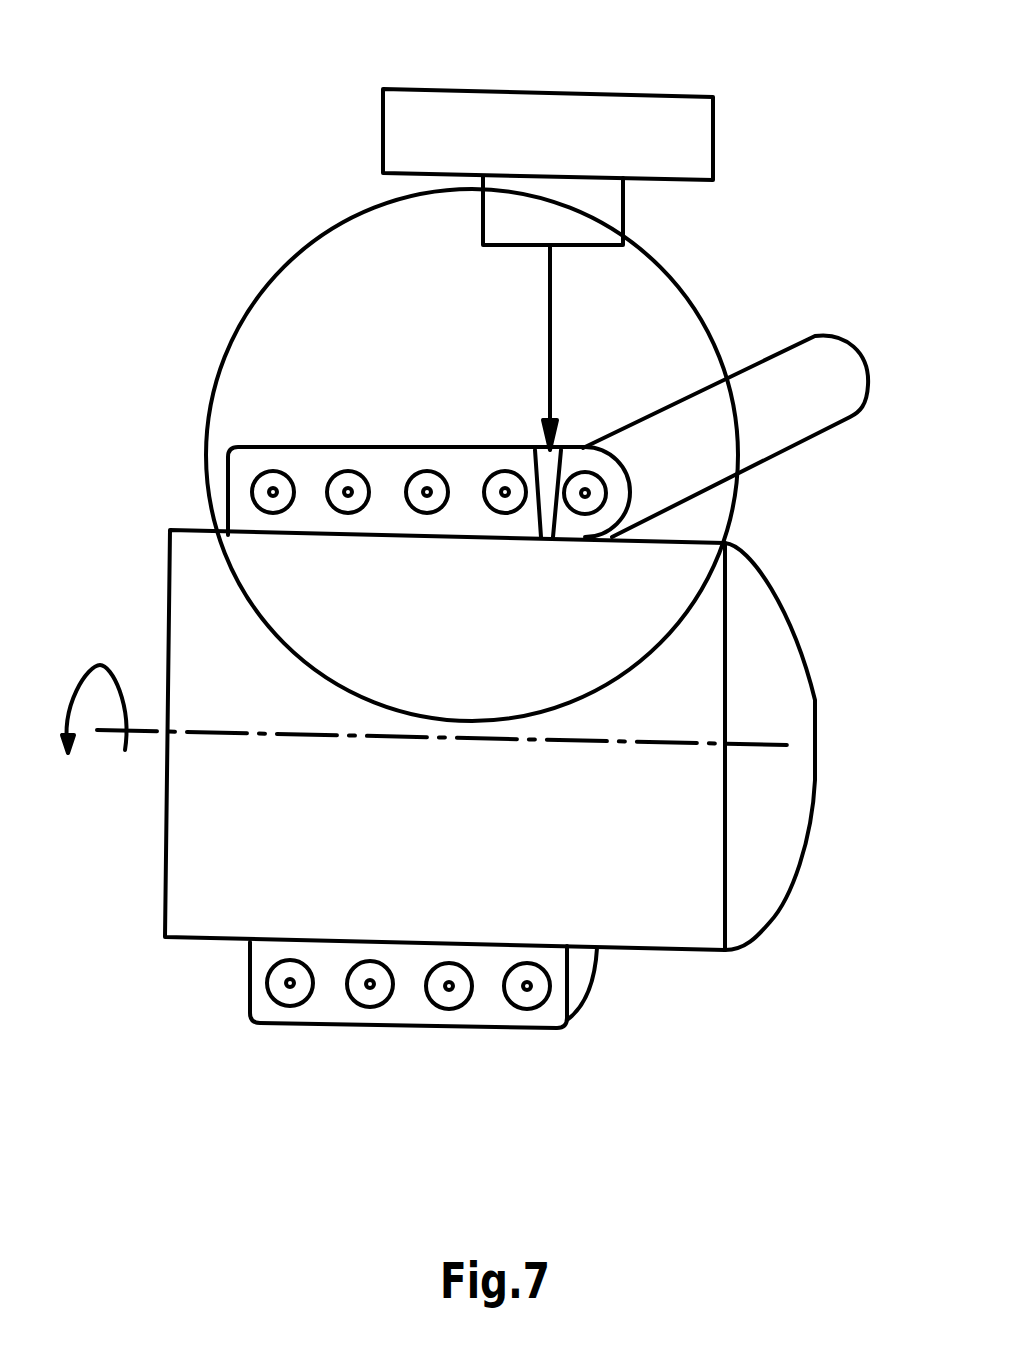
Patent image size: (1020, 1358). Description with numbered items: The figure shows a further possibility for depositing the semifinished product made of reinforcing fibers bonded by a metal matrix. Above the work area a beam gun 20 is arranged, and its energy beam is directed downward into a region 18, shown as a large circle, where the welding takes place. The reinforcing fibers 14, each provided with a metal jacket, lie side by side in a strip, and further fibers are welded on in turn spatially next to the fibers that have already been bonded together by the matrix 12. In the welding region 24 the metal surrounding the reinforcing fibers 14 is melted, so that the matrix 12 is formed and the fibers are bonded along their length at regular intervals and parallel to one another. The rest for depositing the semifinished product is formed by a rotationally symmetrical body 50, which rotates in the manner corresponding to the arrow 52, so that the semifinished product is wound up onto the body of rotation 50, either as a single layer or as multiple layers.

The matrix 12 is at (360, 462).
The reinforcing fibers 14 is at (272, 490).
The region 18 is at (683, 298).
The beam gun 20 is at (552, 125).
The welding region 24 is at (545, 450).
The rotationally symmetrical body 50 is at (757, 858).
The arrow 52 is at (100, 665).